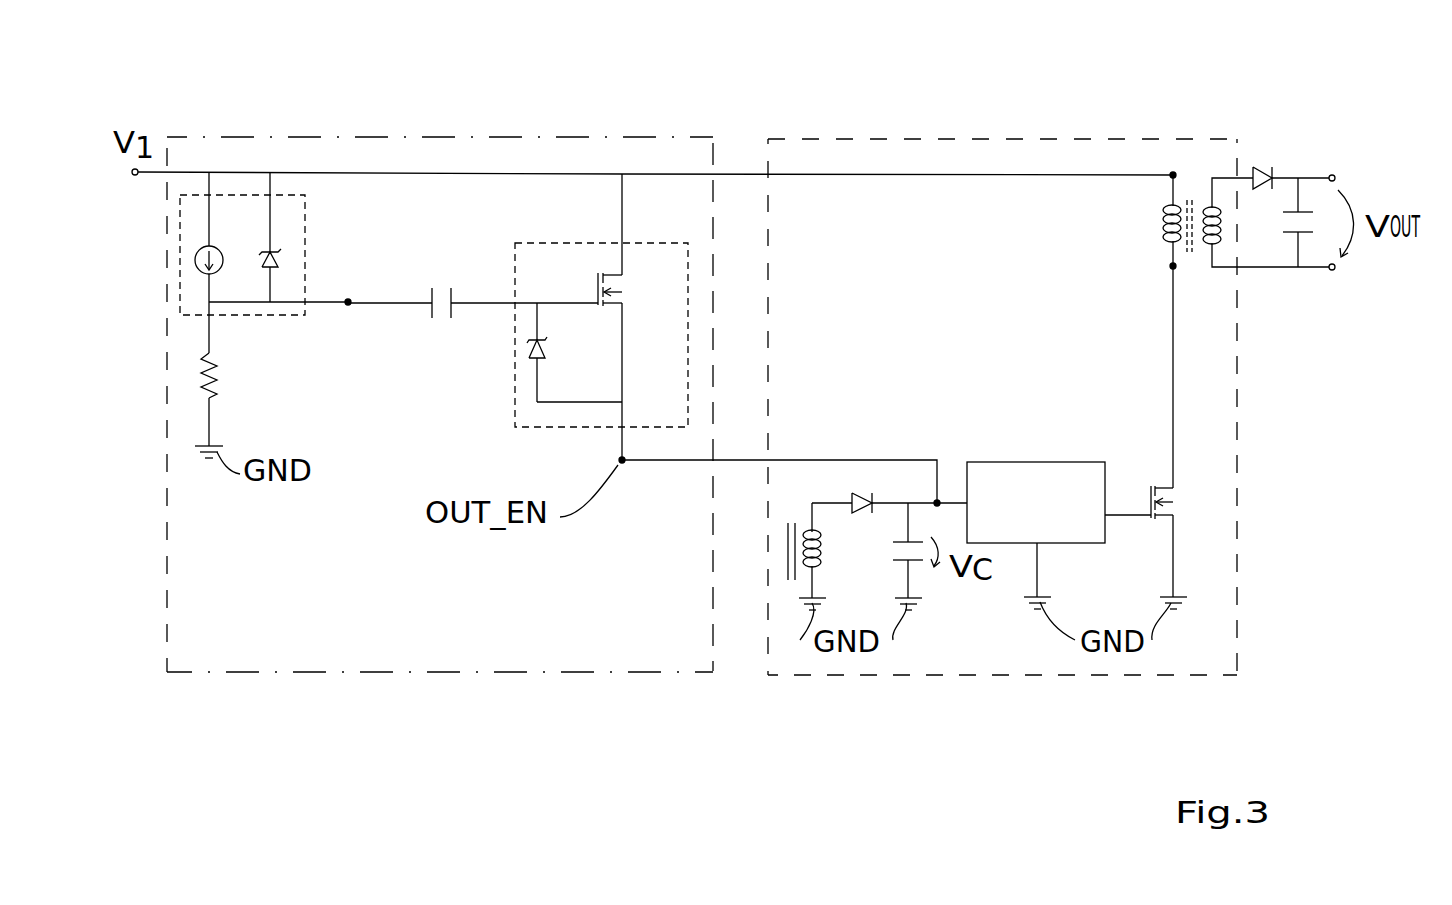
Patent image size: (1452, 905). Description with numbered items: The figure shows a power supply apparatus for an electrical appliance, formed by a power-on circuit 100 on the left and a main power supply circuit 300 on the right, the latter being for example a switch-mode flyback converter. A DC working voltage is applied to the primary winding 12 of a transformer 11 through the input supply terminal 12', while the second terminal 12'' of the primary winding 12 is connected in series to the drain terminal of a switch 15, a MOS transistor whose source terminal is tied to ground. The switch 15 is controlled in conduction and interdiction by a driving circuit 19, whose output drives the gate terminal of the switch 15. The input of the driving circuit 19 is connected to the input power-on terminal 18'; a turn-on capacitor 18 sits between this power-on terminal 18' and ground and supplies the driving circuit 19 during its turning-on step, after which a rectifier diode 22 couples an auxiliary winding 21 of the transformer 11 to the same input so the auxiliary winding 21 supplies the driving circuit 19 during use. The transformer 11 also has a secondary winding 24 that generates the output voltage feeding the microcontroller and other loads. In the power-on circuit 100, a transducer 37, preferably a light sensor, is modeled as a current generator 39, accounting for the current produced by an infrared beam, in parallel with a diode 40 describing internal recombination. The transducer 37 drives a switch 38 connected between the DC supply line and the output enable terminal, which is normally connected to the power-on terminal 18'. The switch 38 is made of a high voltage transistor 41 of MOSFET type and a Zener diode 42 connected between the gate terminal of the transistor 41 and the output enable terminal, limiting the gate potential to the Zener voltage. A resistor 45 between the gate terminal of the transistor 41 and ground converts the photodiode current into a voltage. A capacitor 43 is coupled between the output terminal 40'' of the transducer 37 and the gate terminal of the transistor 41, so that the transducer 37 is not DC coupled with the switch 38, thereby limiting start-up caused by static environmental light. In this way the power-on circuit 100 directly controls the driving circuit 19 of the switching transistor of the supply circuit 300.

The power-on circuit 100 is at (510, 136).
The main power supply circuit 300 is at (1010, 138).
The transducer 37 is at (288, 195).
The current generator 39 is at (215, 252).
The diode 40 is at (305, 237).
The output terminal of the transducer 40'' is at (388, 282).
The switch 38 is at (523, 243).
The high voltage transistor 41 is at (630, 292).
The Zener diode 42 is at (545, 347).
The capacitor 43 is at (425, 322).
The resistor 45 is at (213, 370).
The transformer 11 is at (1192, 188).
The primary winding 12 is at (1146, 233).
The input supply terminal 12' is at (1136, 197).
The second terminal 12'' is at (1134, 283).
The secondary winding 24 is at (1218, 237).
The input power-on terminal 18' is at (794, 463).
The rectifier diode 22 is at (860, 494).
The driving circuit 19 is at (1059, 535).
The auxiliary winding 21 is at (822, 548).
The turn-on capacitor 18 is at (888, 556).
The switch 15 is at (1178, 508).